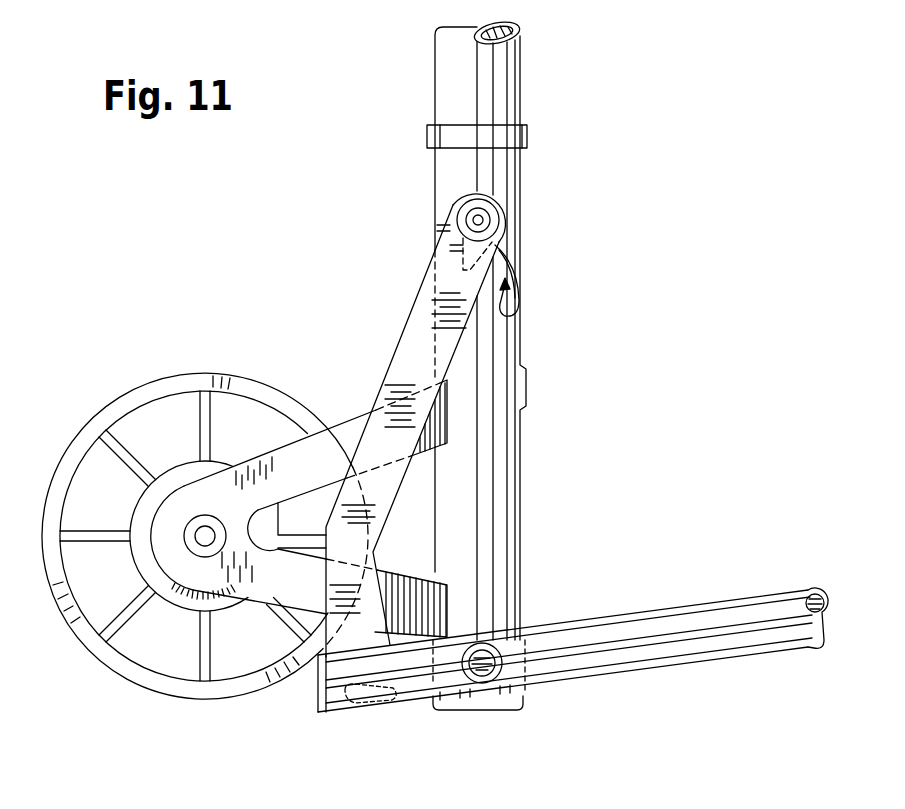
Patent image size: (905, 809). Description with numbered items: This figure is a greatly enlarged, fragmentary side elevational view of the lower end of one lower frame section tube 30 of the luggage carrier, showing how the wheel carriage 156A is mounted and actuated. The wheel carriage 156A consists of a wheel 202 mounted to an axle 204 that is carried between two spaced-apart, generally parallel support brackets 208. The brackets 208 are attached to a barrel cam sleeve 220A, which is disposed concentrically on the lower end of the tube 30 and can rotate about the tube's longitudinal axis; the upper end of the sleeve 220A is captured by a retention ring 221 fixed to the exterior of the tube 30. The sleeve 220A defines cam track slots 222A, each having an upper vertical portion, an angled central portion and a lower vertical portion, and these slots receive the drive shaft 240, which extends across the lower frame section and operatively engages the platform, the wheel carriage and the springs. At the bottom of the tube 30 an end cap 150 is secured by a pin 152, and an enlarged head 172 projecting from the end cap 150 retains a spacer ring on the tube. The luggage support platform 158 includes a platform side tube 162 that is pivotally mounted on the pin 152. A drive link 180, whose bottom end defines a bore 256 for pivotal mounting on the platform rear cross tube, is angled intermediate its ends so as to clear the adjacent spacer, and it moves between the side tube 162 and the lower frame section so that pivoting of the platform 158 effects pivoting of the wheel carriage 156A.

The tube 30 is at (510, 78).
The retention ring 221 is at (527, 135).
The barrel cam sleeve 220A is at (455, 172).
The drive shaft 240 is at (483, 220).
The drive link 180 is at (420, 328).
The cam track slot 222A is at (517, 314).
The wheel carriage 156A is at (234, 362).
The wheel 202 is at (128, 398).
The axle 204 is at (203, 527).
The support bracket 208 is at (348, 432).
The luggage support platform 158 is at (714, 588).
The platform side tube 162 is at (633, 638).
The bore 256 is at (315, 700).
The pin 152 is at (485, 675).
The enlarged head 172 is at (512, 692).
The end cap 150 is at (536, 703).